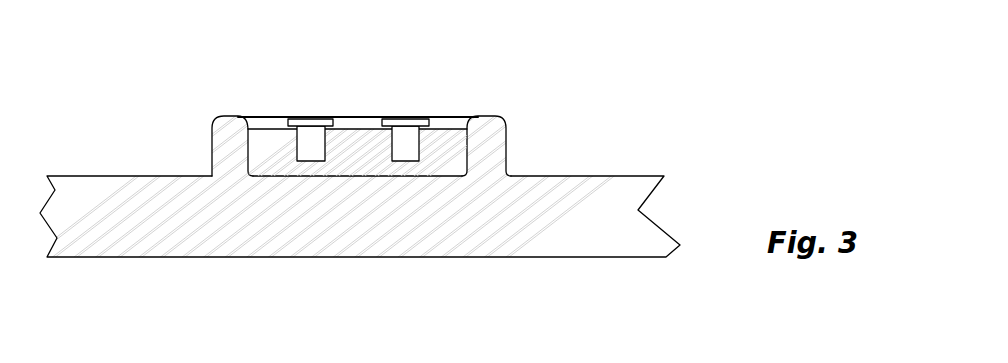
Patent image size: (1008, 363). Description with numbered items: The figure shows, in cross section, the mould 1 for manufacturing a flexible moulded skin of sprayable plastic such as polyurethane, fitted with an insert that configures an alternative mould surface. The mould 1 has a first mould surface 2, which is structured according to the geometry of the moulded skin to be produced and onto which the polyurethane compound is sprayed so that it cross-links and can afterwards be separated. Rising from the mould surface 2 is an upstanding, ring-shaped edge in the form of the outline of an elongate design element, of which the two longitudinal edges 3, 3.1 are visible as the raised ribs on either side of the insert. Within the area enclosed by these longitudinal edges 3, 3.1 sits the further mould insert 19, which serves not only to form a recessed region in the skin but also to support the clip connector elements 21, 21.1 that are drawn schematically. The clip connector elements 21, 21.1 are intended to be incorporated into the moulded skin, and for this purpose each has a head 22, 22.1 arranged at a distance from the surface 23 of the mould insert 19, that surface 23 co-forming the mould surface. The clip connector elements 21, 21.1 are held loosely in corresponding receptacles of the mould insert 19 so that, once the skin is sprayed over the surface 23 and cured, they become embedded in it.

The mould 1 is at (363, 165).
The mould surface 2 is at (573, 175).
The longitudinal edge 3 is at (230, 140).
The longitudinal edge 3.1 is at (490, 133).
The mould insert 19 is at (343, 166).
The clip connector element 21 is at (300, 160).
The clip connector element 21.1 is at (394, 148).
The head 22 is at (303, 118).
The head 22.1 is at (408, 118).
The surface 23 is at (349, 128).